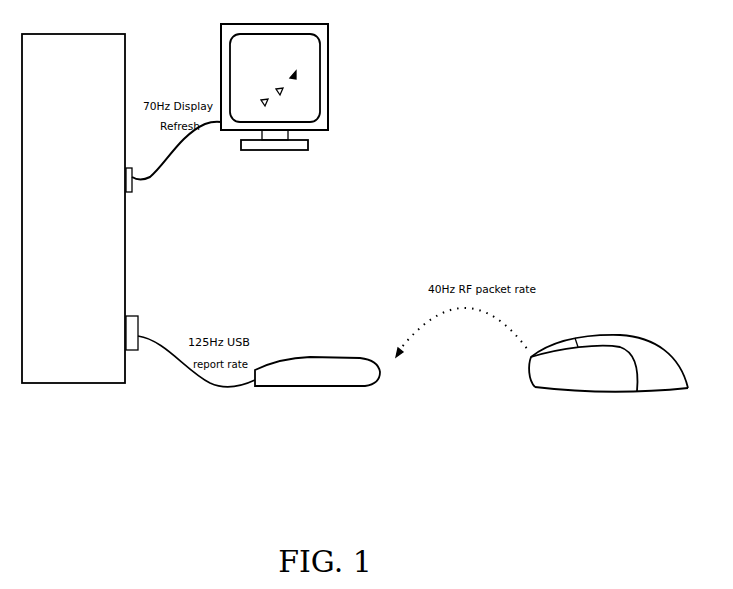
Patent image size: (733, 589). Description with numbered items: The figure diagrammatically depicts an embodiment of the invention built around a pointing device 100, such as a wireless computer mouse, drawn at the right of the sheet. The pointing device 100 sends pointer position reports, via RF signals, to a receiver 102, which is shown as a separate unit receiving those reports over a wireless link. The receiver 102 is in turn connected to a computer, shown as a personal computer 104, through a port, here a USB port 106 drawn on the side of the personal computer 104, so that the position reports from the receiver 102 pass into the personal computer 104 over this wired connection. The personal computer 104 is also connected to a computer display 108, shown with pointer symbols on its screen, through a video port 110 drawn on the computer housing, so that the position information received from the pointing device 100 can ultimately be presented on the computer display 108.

The pointing device 100 is at (578, 341).
The receiver 102 is at (339, 356).
The personal computer 104 is at (126, 255).
The USB port 106 is at (138, 321).
The computer display 108 is at (328, 88).
The video port 110 is at (133, 190).